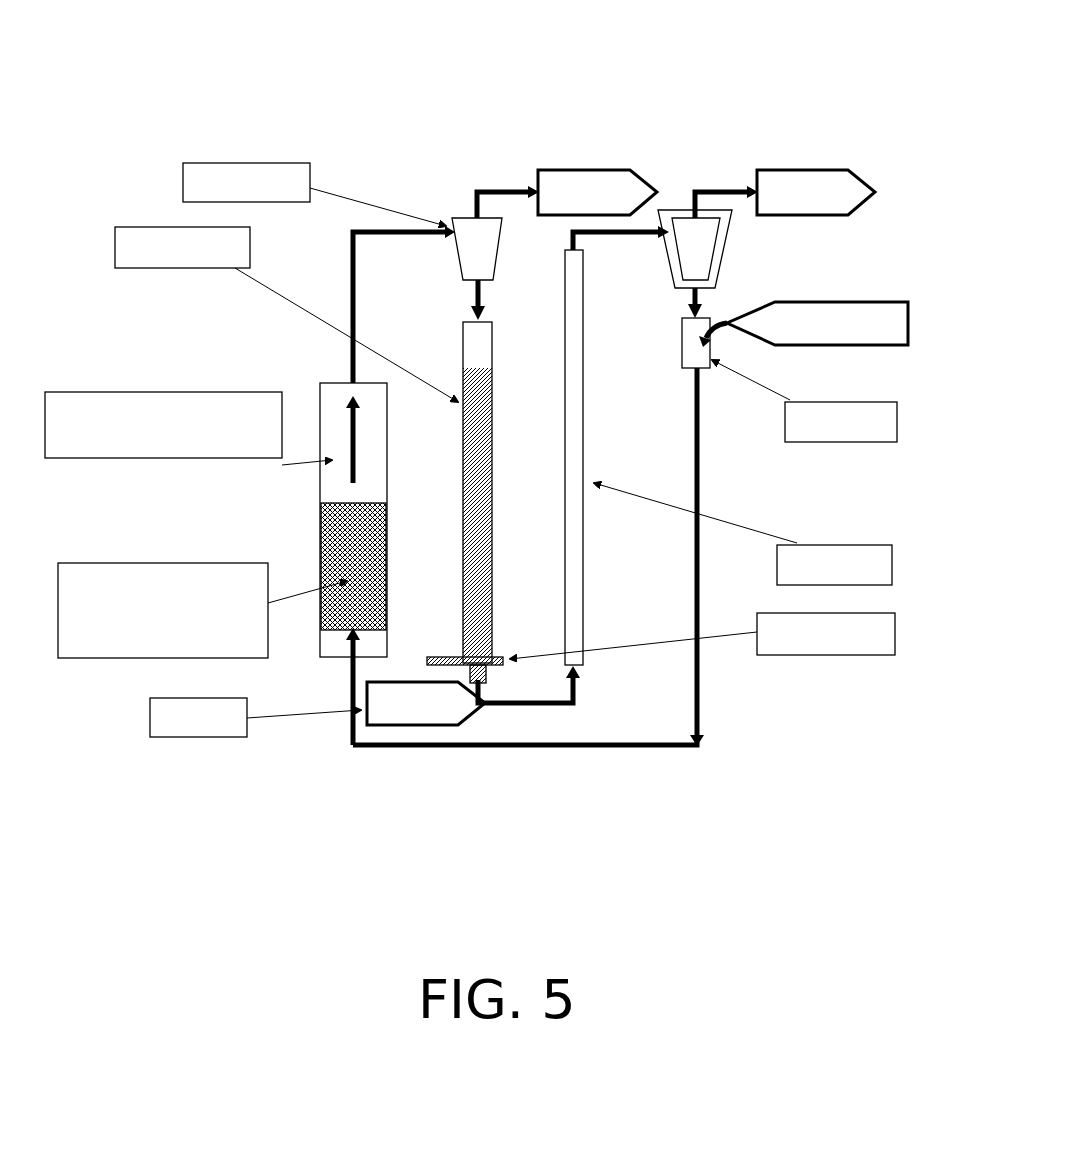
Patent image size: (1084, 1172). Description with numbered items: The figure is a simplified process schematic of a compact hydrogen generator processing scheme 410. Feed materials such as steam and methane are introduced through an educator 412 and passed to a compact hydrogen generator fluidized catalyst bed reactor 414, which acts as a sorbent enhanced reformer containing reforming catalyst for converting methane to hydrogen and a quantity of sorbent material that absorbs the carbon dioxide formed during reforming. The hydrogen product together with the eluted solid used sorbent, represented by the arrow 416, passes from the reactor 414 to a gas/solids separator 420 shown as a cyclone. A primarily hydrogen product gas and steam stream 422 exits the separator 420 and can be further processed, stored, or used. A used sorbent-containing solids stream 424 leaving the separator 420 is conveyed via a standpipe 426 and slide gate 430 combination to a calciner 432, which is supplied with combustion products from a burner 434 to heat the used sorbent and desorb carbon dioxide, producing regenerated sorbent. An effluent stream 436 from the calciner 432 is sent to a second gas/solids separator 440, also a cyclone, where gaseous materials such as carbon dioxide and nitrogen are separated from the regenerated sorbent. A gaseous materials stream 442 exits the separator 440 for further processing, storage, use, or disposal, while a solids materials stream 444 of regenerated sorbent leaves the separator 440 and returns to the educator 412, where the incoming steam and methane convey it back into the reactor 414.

The compact hydrogen generator processing scheme 410 is at (467, 374).
The educator 412 is at (795, 399).
The compact hydrogen generator fluidized catalyst bed reactor 414 is at (222, 624).
The arrow representing H2 product and eluted solid used sorbent 416 is at (352, 430).
The gas/solids separator 420 is at (342, 201).
The H2 product gas and steam stream 422 is at (495, 190).
The used sorbent-containing solids stream 424 is at (483, 312).
The standpipe 426 is at (303, 445).
The slide gate 430 is at (661, 655).
The calciner 432 is at (762, 457).
The burner 434 is at (365, 726).
The effluent stream 436 is at (612, 235).
The gas/solids separator 440 is at (675, 210).
The gaseous materials stream 442 is at (722, 190).
The solids materials stream 444 is at (700, 298).